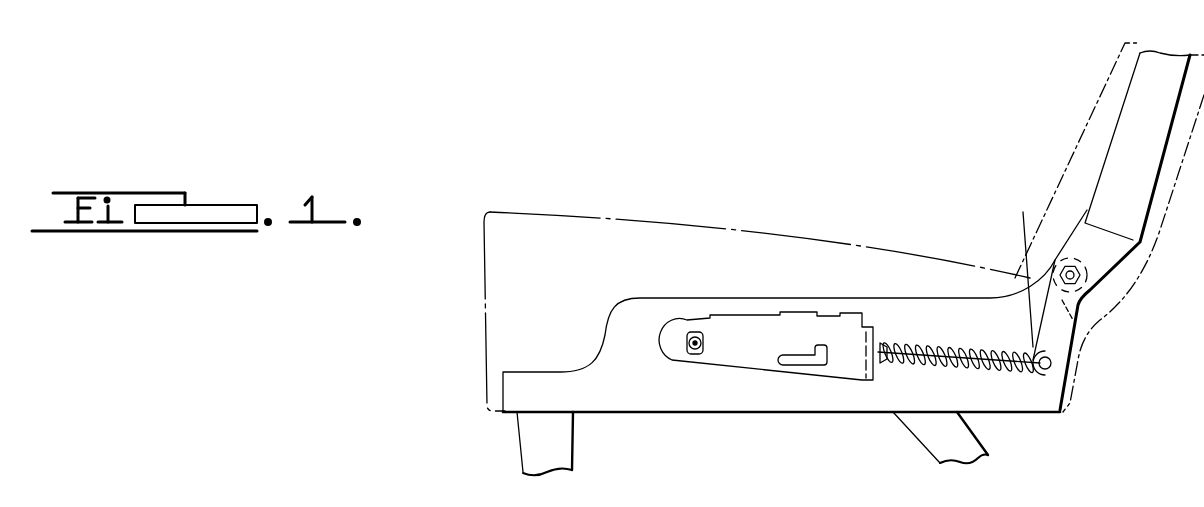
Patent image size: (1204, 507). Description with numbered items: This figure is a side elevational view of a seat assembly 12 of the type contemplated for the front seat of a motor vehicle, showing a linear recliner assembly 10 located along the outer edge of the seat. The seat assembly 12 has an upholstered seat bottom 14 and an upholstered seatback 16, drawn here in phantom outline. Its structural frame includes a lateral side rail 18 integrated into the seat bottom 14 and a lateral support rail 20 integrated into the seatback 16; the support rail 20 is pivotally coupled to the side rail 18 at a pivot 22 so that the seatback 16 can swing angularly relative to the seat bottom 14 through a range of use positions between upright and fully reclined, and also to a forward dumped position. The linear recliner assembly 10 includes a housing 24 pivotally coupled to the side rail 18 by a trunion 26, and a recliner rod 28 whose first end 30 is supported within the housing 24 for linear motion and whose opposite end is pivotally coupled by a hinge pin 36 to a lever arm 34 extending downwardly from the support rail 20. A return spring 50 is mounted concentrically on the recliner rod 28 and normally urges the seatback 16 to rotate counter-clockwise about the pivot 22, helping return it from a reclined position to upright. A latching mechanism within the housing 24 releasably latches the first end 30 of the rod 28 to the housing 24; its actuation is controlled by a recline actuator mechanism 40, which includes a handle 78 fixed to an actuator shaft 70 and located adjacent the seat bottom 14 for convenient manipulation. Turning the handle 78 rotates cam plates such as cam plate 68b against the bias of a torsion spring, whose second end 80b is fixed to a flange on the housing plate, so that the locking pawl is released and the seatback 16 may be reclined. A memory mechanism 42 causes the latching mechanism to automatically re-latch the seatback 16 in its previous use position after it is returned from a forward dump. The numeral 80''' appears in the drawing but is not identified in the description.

The linear recliner assembly 10 is at (298, 506).
The seat assembly 12 is at (784, 184).
The seat bottom 14 is at (826, 234).
The seatback 16 is at (1076, 120).
The lateral side rail 18 is at (613, 337).
The lateral support rail 20 is at (1143, 80).
The pivot 22 is at (1087, 278).
The housing 24 is at (732, 358).
The trunion 26 is at (683, 340).
The recliner rod 28 is at (960, 345).
The first end 30 is at (261, 499).
The lever arm 34 is at (1060, 325).
The hinge pin 36 is at (1060, 368).
The recline actuator mechanism 40 is at (387, 506).
The memory mechanism 42 is at (651, 500).
The return spring 50 is at (960, 345).
The cam plate 68b is at (347, 491).
The actuator shaft 70 is at (851, 380).
The handle 78 is at (797, 362).
The second end 80b is at (439, 491).
The tooth 80''' is at (495, 498).